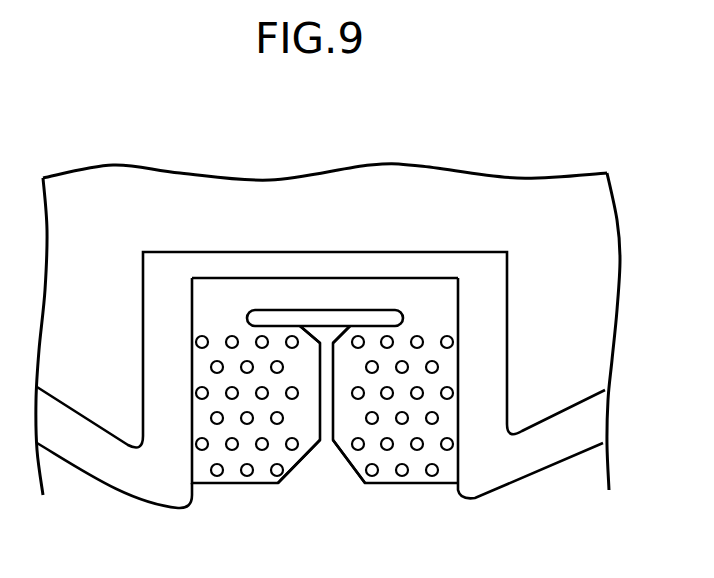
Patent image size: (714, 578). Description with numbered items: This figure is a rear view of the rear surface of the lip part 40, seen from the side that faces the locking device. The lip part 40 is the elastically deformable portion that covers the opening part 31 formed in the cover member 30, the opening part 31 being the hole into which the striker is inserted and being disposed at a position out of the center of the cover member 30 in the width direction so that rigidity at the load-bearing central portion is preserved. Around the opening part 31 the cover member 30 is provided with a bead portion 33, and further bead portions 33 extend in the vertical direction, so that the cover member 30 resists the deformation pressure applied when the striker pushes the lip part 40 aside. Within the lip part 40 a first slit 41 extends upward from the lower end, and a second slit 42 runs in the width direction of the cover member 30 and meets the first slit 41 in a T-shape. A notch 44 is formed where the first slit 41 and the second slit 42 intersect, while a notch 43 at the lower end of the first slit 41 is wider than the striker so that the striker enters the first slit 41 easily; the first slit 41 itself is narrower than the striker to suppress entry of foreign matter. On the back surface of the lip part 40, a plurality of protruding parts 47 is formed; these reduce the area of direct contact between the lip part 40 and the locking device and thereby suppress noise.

The cover member 30 is at (538, 457).
The opening part 31 is at (458, 432).
The bead portion 33 is at (485, 335).
The lip part 40 is at (397, 483).
The first slit 41 is at (320, 395).
The second slit 42 is at (327, 318).
The notch 43 is at (352, 468).
The notch 44 is at (307, 331).
The protruding part 47 is at (446, 336).